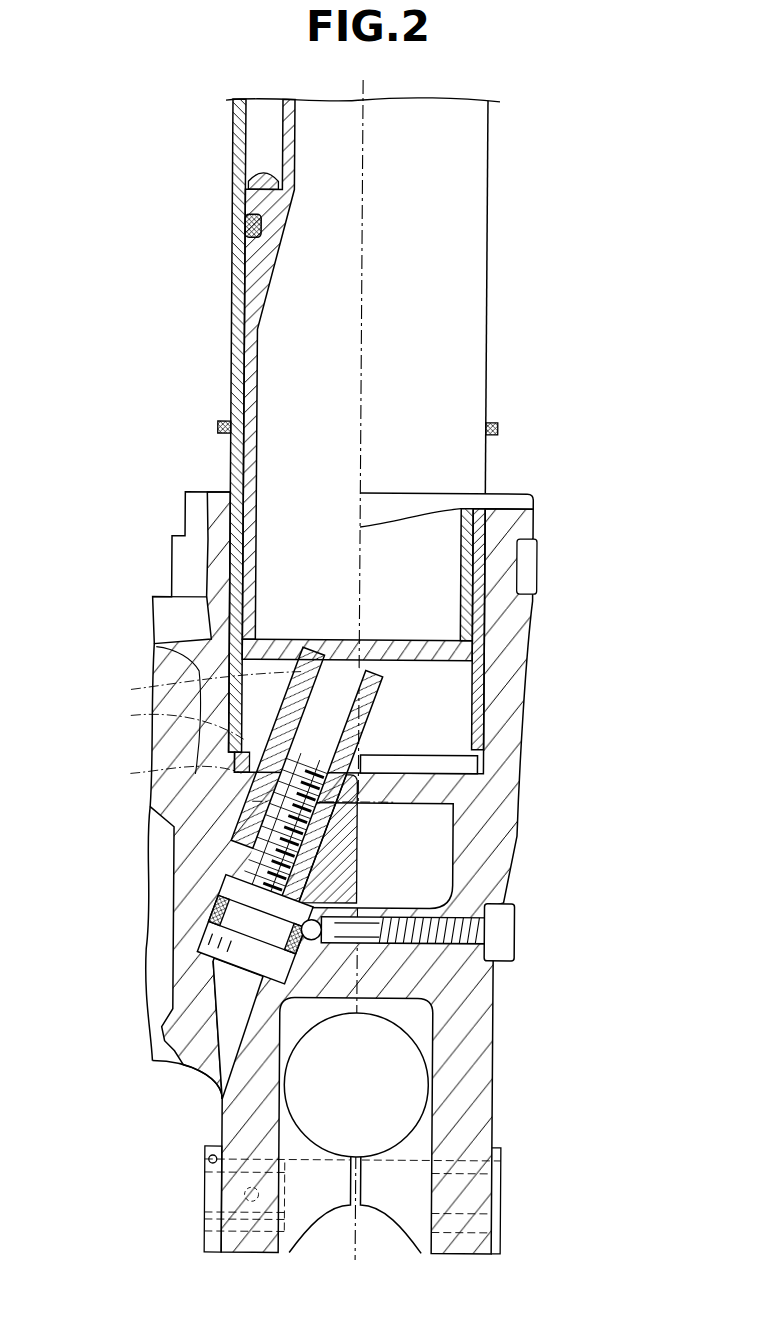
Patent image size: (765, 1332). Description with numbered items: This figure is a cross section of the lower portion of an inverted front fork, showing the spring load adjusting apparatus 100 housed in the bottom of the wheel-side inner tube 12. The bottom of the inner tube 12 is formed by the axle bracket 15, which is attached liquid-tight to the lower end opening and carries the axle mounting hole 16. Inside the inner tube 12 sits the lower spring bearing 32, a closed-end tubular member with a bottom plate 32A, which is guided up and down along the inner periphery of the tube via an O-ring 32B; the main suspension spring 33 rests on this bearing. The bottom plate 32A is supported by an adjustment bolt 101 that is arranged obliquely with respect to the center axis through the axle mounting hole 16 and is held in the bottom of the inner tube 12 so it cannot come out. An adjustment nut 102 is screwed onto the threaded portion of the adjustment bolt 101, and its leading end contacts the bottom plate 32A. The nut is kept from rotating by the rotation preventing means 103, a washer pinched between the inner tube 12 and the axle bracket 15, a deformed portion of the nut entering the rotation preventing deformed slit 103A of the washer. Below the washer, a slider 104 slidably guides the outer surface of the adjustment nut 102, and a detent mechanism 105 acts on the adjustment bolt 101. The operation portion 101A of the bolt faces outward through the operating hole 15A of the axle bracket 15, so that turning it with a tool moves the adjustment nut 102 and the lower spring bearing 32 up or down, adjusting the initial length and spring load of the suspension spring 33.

The inner tube 12 is at (233, 136).
The main suspension spring 33 is at (247, 173).
The O-ring 32B is at (248, 225).
The lower spring bearing 32 is at (272, 255).
The bottom plate 32A is at (418, 652).
The adjustment nut 102 is at (305, 682).
The spring load adjusting apparatus 100 is at (208, 839).
The rotation preventing deformed slit 103A is at (246, 770).
The rotation preventing means 103 is at (417, 766).
The adjustment bolt 101 is at (268, 870).
The slider 104 is at (356, 828).
The axle bracket 15 is at (496, 848).
The operation portion 101A is at (238, 922).
The detent mechanism 105 is at (320, 948).
The operating hole 15A is at (158, 1064).
The axle mounting hole 16 is at (392, 1140).